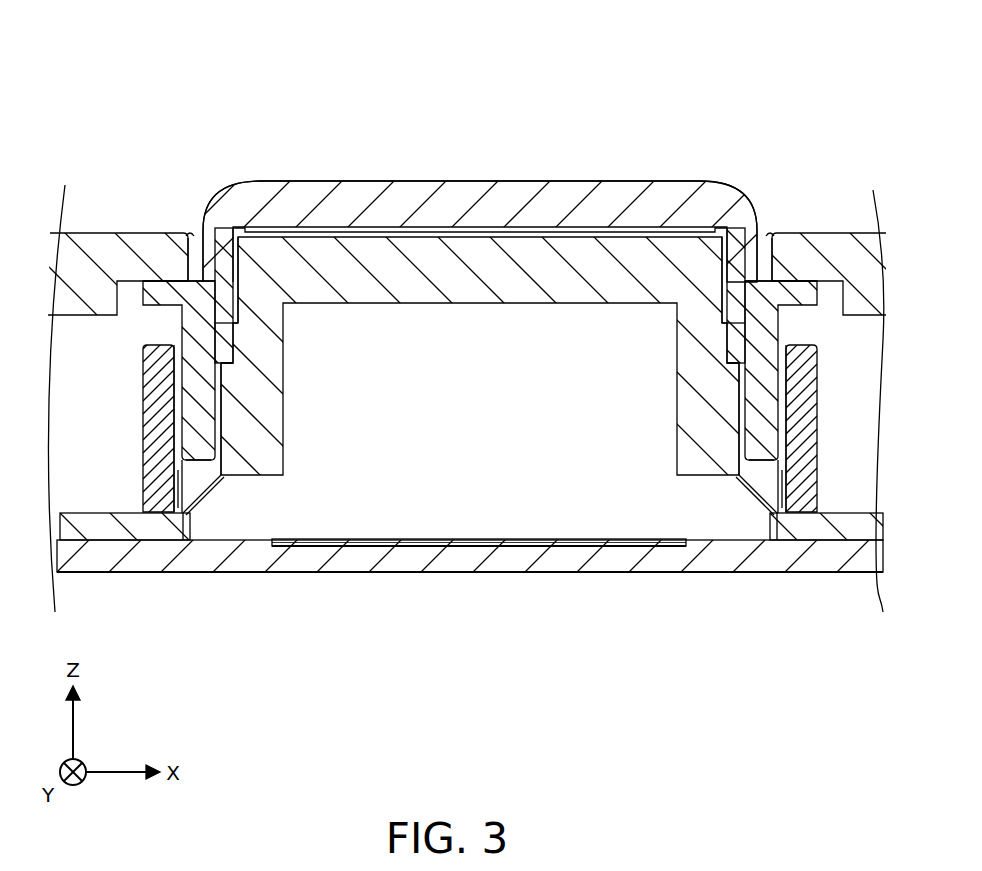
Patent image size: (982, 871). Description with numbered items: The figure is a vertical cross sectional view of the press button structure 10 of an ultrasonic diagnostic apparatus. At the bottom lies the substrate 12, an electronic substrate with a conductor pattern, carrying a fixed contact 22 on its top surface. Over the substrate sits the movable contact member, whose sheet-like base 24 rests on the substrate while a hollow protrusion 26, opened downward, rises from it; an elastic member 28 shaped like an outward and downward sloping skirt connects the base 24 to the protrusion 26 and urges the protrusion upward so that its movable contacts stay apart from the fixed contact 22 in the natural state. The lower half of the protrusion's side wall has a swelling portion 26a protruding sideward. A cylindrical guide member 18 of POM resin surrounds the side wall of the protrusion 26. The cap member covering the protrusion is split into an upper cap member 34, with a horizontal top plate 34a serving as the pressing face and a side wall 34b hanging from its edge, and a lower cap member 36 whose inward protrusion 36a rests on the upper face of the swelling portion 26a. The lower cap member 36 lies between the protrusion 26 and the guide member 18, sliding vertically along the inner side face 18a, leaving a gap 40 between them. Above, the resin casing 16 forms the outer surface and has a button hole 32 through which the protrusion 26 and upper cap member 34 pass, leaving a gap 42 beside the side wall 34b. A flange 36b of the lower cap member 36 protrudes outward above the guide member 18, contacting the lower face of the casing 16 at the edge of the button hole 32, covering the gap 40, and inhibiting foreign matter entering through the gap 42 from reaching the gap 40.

The press button structure 10 is at (463, 76).
The substrate 12 is at (113, 573).
The casing 16 is at (94, 231).
The guide member 18 is at (480, 431).
The inner side face 18a is at (178, 392).
The fixed contact 22 is at (480, 538).
The base 24 is at (96, 500).
The protrusion 26 is at (488, 282).
The swelling portion 26a is at (234, 422).
The elastic member 28 is at (224, 494).
The button hole 32 is at (188, 243).
The upper cap member 34 is at (501, 186).
The top plate 34a is at (569, 180).
The side wall 34b is at (243, 200).
The lower cap member 36 is at (491, 412).
The inward protrusion 36a is at (228, 338).
The flange 36b is at (160, 292).
The gap 40 is at (178, 468).
The gap 42 is at (191, 216).